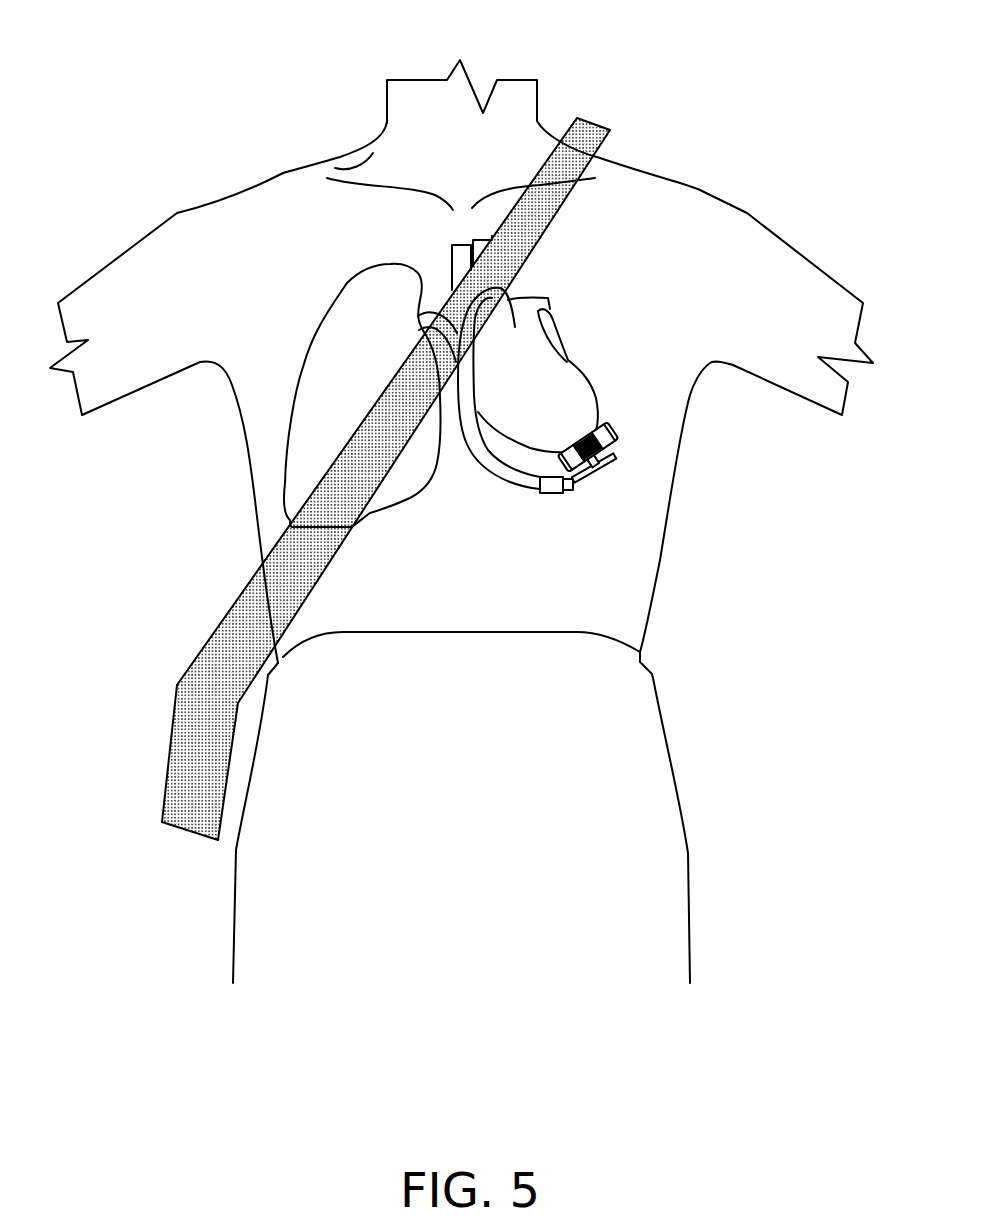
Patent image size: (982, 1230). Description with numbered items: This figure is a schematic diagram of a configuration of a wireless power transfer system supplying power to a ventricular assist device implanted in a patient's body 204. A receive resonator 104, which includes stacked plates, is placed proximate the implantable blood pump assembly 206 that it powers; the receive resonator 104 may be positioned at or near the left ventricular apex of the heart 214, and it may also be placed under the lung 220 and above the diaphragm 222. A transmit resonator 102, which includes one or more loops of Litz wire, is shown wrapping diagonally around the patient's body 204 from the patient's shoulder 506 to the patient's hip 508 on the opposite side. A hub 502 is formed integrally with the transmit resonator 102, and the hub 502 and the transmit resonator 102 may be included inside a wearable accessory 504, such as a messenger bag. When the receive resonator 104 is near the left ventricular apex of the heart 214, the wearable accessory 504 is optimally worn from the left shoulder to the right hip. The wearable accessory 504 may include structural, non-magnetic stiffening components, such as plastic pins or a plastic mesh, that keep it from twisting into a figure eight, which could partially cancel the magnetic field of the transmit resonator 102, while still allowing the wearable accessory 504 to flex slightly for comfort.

The transmit resonator 102 is at (583, 137).
The receive resonator 104 is at (616, 436).
The patient's body 204 is at (658, 583).
The blood pump assembly 206 is at (537, 480).
The heart 214 is at (547, 383).
The lung 220 is at (338, 340).
The diaphragm 222 is at (470, 632).
The hub 502 is at (202, 822).
The wearable accessory 504 is at (193, 687).
The patient's shoulder 506 is at (500, 207).
The patient's hip 508 is at (270, 697).